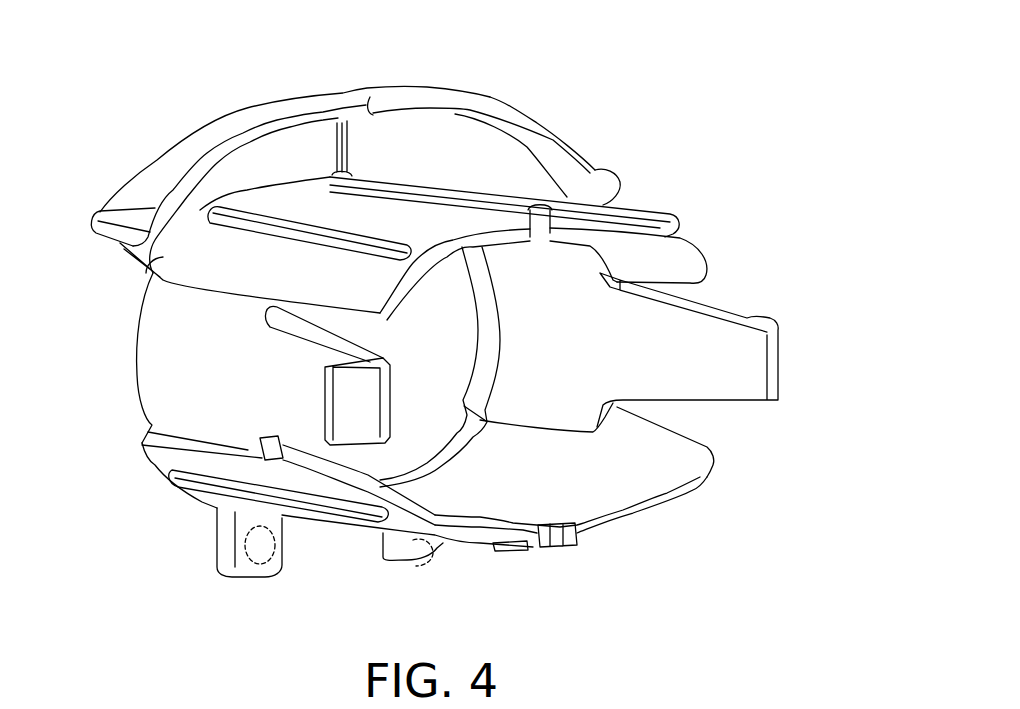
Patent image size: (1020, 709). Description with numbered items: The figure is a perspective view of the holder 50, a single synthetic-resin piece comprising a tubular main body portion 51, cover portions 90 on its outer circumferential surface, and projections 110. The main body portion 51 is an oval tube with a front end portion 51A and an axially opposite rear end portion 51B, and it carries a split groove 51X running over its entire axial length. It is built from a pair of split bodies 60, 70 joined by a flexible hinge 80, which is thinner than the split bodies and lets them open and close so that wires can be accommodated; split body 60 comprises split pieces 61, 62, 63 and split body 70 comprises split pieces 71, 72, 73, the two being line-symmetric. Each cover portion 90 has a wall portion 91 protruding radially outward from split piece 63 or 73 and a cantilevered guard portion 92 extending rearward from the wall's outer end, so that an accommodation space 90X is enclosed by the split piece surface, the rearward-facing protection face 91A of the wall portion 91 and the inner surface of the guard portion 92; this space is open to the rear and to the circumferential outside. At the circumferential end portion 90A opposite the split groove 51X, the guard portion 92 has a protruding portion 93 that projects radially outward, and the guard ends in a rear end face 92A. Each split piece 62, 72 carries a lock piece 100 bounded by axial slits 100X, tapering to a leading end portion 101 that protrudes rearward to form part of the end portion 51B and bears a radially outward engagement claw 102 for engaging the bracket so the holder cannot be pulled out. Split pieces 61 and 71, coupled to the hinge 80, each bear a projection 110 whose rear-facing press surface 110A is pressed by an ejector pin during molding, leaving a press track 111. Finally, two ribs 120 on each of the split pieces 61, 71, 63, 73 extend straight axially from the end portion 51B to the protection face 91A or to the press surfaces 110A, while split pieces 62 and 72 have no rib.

The holder 50 is at (602, 61).
The main body portion 51 is at (411, 422).
The end portion 51A is at (140, 347).
The end portion 51B is at (440, 240).
The split groove 51X is at (538, 237).
The split body 60 is at (607, 537).
The split piece 61 is at (667, 480).
The split piece 62 is at (463, 403).
The split piece 63 is at (703, 250).
The split body 70 is at (503, 550).
The split piece 71 is at (155, 457).
The split piece 72 is at (138, 378).
The split piece 73 is at (390, 303).
The hinge 80 is at (527, 513).
The cover portion 90 is at (352, 170).
The end portion 90A is at (107, 237).
The accommodation space 90X is at (483, 140).
The wall portion 91 is at (243, 157).
The protection face 91A is at (147, 273).
The guard portion 92 is at (196, 138).
The end face 92A is at (547, 127).
The protruding portion 93 is at (100, 220).
The lock piece 100 is at (287, 353).
The slit 100X is at (296, 445).
The leading end portion 101 is at (375, 360).
The engagement claw 102 is at (320, 397).
The projection 110 is at (213, 537).
The press surface 110A is at (250, 572).
The press track 111 is at (281, 562).
The rib 120 is at (310, 233).